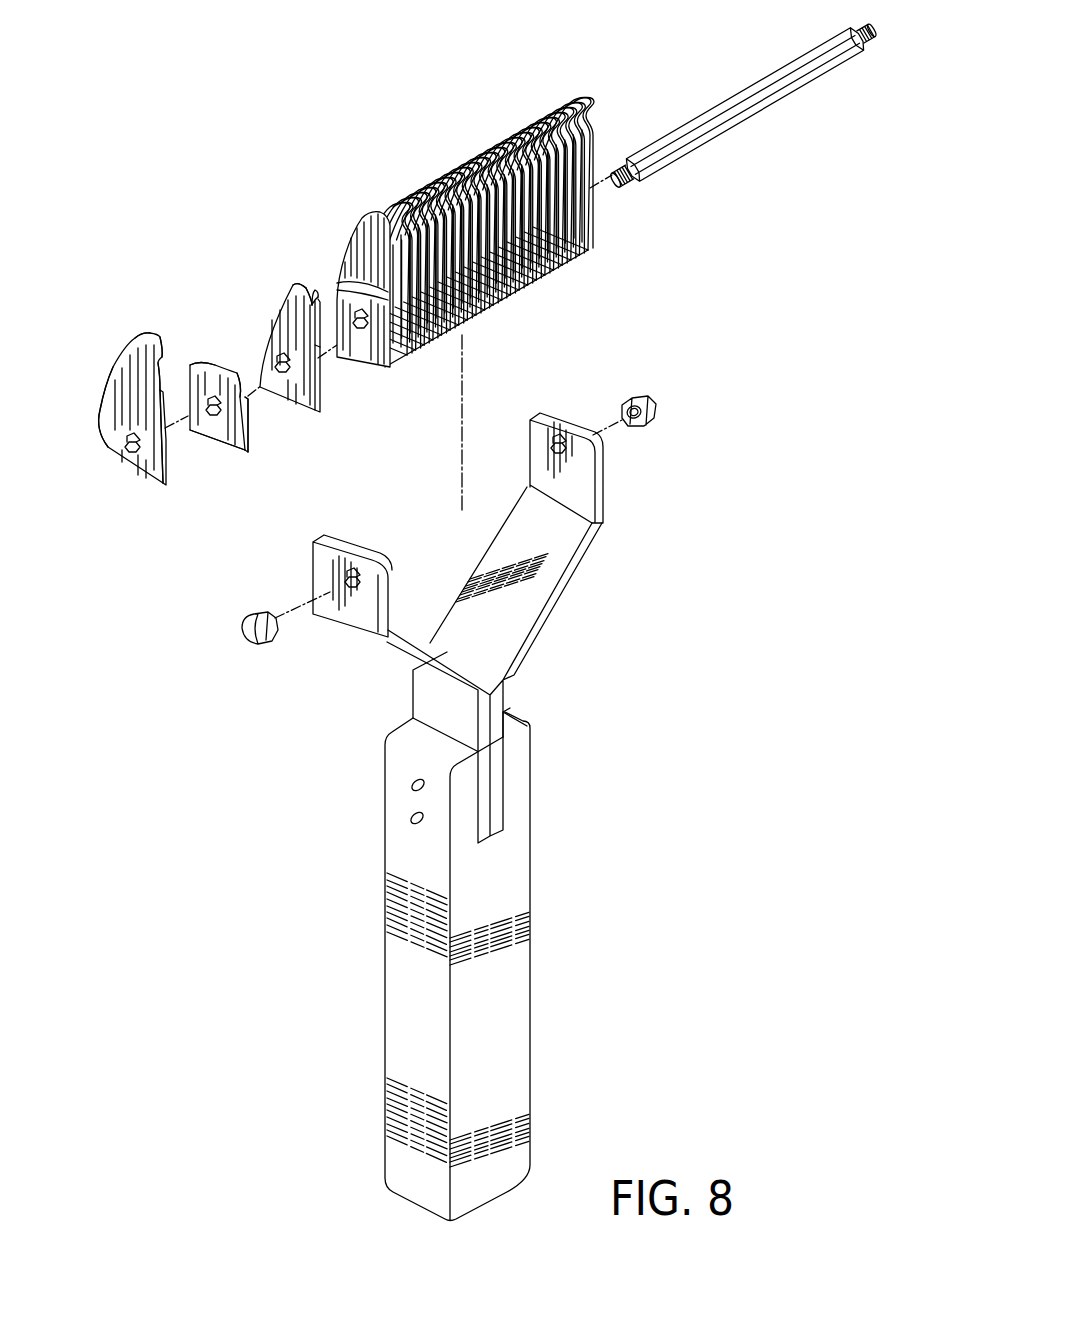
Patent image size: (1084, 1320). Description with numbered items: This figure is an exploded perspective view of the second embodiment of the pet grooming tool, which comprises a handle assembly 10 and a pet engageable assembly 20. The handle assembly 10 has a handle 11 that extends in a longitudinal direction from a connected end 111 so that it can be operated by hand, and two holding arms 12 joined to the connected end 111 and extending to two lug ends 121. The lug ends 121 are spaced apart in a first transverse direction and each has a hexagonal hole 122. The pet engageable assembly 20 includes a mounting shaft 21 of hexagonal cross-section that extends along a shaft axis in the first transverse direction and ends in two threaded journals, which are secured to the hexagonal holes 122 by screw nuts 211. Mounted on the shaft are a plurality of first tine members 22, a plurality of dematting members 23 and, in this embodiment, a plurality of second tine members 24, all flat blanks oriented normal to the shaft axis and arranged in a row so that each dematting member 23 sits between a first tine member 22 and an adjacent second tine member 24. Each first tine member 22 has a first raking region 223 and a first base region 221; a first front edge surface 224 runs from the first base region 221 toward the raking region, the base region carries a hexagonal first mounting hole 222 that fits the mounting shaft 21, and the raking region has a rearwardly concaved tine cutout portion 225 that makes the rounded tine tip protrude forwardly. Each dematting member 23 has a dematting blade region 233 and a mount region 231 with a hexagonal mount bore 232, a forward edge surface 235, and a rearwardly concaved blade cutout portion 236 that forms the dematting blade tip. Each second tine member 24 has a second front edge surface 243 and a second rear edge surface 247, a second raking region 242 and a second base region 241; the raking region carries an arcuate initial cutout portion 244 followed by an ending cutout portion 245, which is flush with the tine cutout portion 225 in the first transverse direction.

The handle assembly 10 is at (533, 911).
The handle 11 is at (520, 974).
The connected end 111 is at (518, 760).
The holding arm 12 is at (593, 540).
The lug end 121 is at (600, 497).
The hexagonal hole 122 is at (553, 440).
The pet engageable assembly 20 is at (462, 148).
The mounting shaft 21 is at (740, 123).
The screw nut 211 is at (652, 398).
The first tine member 22 is at (302, 398).
The first base region 221 is at (278, 392).
The first mounting hole 222 is at (314, 367).
The first raking region 223 is at (293, 298).
The first front edge surface 224 is at (345, 350).
The tine cutout portion 225 is at (321, 306).
The dematting member 23 is at (224, 448).
The mount region 231 is at (208, 432).
The mount bore 232 is at (222, 444).
The dematting blade region 233 is at (210, 363).
The forward edge surface 235 is at (248, 425).
The blade cutout portion 236 is at (241, 385).
The second tine member 24 is at (148, 485).
The second base region 241 is at (120, 457).
The second raking region 242 is at (147, 343).
The second front edge surface 243 is at (162, 468).
The initial cutout portion 244 is at (160, 355).
The ending cutout portion 245 is at (163, 390).
The second rear edge surface 247 is at (100, 430).